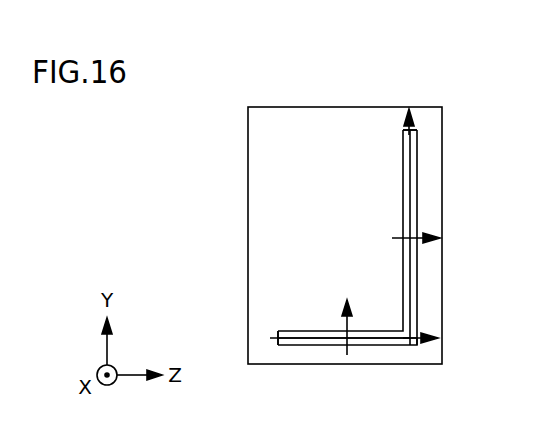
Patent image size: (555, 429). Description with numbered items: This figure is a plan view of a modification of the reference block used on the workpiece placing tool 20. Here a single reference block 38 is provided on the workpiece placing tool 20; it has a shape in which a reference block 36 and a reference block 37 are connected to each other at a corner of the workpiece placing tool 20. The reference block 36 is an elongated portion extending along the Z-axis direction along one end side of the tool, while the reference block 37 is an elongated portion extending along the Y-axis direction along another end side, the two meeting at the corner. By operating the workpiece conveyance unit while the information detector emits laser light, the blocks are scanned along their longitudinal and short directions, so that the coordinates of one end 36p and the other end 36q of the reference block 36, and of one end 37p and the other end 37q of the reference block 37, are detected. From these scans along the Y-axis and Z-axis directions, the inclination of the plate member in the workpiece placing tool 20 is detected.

The workpiece placing tool 20 is at (442, 185).
The reference block 36 is at (307, 333).
The one end of reference block 36 36p is at (278, 338).
The other end of reference block 36 36q is at (411, 343).
The reference block 37 is at (405, 253).
The one end of reference block 37 37p is at (410, 347).
The other end of reference block 37 37q is at (413, 128).
The reference block 38 is at (201, 232).